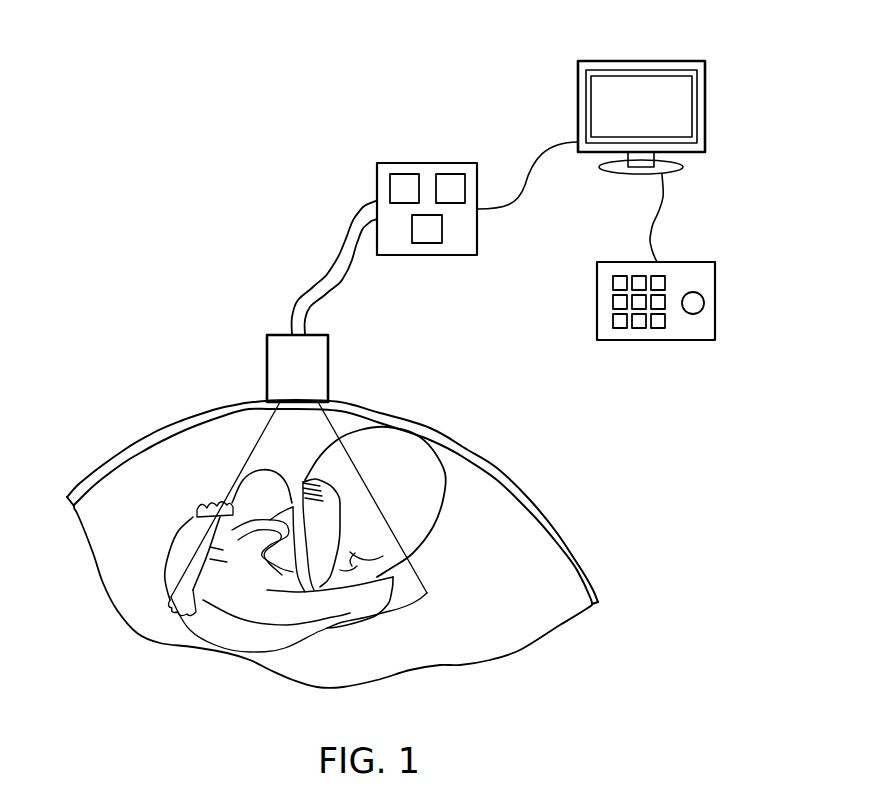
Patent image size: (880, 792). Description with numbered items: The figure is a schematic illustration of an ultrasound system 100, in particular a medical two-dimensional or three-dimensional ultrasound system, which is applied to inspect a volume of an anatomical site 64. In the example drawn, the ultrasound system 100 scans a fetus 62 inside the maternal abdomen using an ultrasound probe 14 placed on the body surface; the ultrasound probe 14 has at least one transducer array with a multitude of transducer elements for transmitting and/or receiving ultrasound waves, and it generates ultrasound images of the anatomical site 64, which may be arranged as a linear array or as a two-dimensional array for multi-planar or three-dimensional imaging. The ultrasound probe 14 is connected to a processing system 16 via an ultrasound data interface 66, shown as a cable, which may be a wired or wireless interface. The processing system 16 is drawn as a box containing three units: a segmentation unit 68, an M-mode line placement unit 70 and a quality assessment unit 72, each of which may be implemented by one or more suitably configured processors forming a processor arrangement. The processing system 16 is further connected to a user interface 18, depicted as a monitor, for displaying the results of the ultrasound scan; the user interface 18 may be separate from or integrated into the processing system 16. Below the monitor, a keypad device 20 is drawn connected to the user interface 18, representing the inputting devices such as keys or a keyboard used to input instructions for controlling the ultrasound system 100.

The ultrasound system 100 is at (264, 122).
The ultrasound probe 14 is at (331, 367).
The processing system 16 is at (425, 163).
The user interface 18 is at (640, 61).
The user input device / keypad 20 is at (597, 296).
The fetus 62 is at (228, 636).
The anatomical site 64 is at (412, 607).
The ultrasound data interface 66 is at (377, 200).
The segmentation unit 68 is at (397, 174).
The M-mode line placement unit 70 is at (455, 174).
The quality assessment unit 72 is at (428, 243).